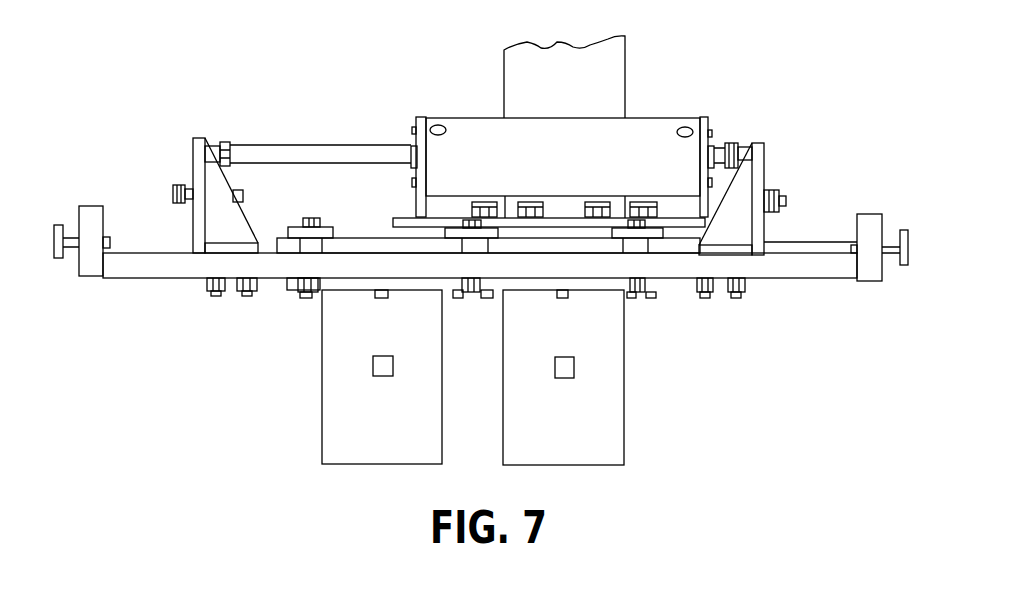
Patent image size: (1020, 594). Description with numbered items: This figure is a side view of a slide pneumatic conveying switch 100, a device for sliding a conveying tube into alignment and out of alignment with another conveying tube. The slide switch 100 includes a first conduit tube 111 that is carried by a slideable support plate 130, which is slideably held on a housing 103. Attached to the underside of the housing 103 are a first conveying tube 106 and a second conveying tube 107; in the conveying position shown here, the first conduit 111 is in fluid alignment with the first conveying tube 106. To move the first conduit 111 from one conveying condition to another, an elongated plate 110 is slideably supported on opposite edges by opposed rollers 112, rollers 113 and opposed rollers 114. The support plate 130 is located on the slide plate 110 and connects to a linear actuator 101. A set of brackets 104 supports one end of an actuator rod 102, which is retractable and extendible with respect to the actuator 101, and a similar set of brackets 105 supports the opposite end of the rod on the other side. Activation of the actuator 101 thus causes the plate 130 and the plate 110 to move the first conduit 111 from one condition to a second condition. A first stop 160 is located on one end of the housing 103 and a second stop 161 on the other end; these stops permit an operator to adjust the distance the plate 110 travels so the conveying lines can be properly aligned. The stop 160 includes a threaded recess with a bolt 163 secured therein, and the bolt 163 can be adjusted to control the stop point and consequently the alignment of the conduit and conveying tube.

The slide switch 100 is at (412, 95).
The linear actuator 101 is at (670, 128).
The actuator rod 102 is at (263, 152).
The housing 103 is at (128, 267).
The bracket 104 is at (193, 170).
The bracket 105 is at (764, 163).
The first conveying tube 106 is at (615, 433).
The second conveying tube 107 is at (328, 434).
The elongated plate 110 is at (675, 248).
The first conduit tube 111 is at (628, 62).
The roller 112 is at (297, 232).
The roller 113 is at (470, 232).
The roller 114 is at (637, 238).
The support plate 130 is at (402, 220).
The first stop 160 is at (88, 206).
The second stop 161 is at (870, 214).
The bolt 163 is at (54, 260).